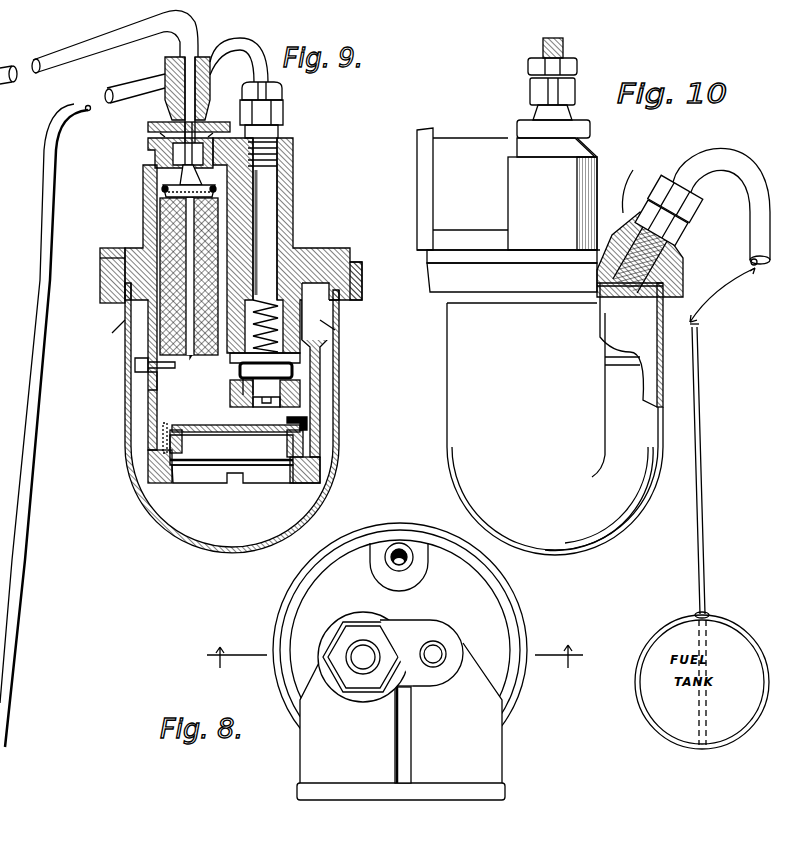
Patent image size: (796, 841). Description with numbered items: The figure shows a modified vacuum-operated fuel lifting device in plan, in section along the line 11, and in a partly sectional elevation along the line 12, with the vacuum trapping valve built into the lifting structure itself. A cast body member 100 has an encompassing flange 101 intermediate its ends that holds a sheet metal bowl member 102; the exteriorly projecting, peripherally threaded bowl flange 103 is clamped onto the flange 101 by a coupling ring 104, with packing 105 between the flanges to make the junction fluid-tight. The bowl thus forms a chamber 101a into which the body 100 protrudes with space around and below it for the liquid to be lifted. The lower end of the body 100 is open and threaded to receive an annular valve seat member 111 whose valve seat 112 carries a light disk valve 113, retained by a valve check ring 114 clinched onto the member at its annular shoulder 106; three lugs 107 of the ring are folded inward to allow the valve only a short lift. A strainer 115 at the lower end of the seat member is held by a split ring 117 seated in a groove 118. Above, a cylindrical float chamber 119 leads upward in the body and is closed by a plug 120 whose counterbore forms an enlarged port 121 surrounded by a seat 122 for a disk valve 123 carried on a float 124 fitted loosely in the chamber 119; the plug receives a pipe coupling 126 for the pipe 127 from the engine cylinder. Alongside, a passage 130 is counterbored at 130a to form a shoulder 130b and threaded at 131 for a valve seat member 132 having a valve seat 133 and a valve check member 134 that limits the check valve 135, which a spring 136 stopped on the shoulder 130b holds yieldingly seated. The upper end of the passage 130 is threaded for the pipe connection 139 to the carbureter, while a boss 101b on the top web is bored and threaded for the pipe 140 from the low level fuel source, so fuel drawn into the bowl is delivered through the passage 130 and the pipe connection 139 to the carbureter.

In FIG. 9, the cast body member 100 is at (302, 220).
In FIG. 10, the cast body member 100 is at (552, 185).
In FIG. 9, the encompassing flange 101 is at (128, 268).
In FIG. 10, the encompassing flange 101 is at (557, 247).
In FIG. 9, the chamber / top web 101a is at (167, 510).
In FIG. 10, the chamber / top web 101a is at (555, 429).
In FIG. 8, the chamber / top web 101a is at (398, 745).
In FIG. 10, the boss 101b is at (650, 224).
In FIG. 8, the boss 101b is at (433, 591).
In FIG. 9, the bowl member 102 is at (127, 402).
In FIG. 9, the bowl flange 103 is at (340, 305).
In FIG. 9, the coupling ring 104 is at (358, 277).
In FIG. 10, the coupling ring 104 is at (512, 271).
In FIG. 9, the packing 105 is at (110, 287).
In FIG. 9, the annular shoulder 106 is at (170, 452).
In FIG. 9, the lugs 107 is at (233, 417).
In FIG. 9, the annular valve seat member 111 is at (303, 433).
In FIG. 9, the valve seat 112 is at (307, 417).
In FIG. 9, the light disk valve 113 is at (310, 398).
In FIG. 9, the valve check ring 114 is at (168, 422).
In FIG. 9, the strainer 115 is at (217, 463).
In FIG. 9, the split ring 117 is at (178, 467).
In FIG. 9, the groove 118 is at (293, 463).
In FIG. 9, the float chamber 119 is at (147, 380).
In FIG. 9, the plug 120 is at (173, 167).
In FIG. 9, the enlarged port 121 is at (185, 183).
In FIG. 9, the seat 122 is at (180, 190).
In FIG. 9, the disk valve 123 is at (187, 203).
In FIG. 9, the float 124 is at (168, 247).
In FIG. 9, the pipe coupling 126 is at (170, 117).
In FIG. 9, the pipe 127 is at (138, 34).
In FIG. 9, the passage 130 is at (265, 183).
In FIG. 9, the counterbore 130a is at (335, 328).
In FIG. 9, the shoulder 130b is at (347, 285).
In FIG. 9, the threaded counterbore 131 is at (310, 380).
In FIG. 9, the valve seat member 132 is at (247, 385).
In FIG. 9, the valve seat 133 is at (290, 365).
In FIG. 9, the valve check member 134 is at (297, 355).
In FIG. 9, the check valve 135 is at (245, 393).
In FIG. 9, the spring 136 is at (283, 330).
In FIG. 9, the pipe connection 139 is at (272, 127).
In FIG. 10, the pipe connection 139 is at (557, 50).
In FIG. 10, the pipe 140 is at (707, 150).
In FIG. 8, the section line 11 is at (390, 656).
In FIG. 8, the section line 12 is at (398, 600).